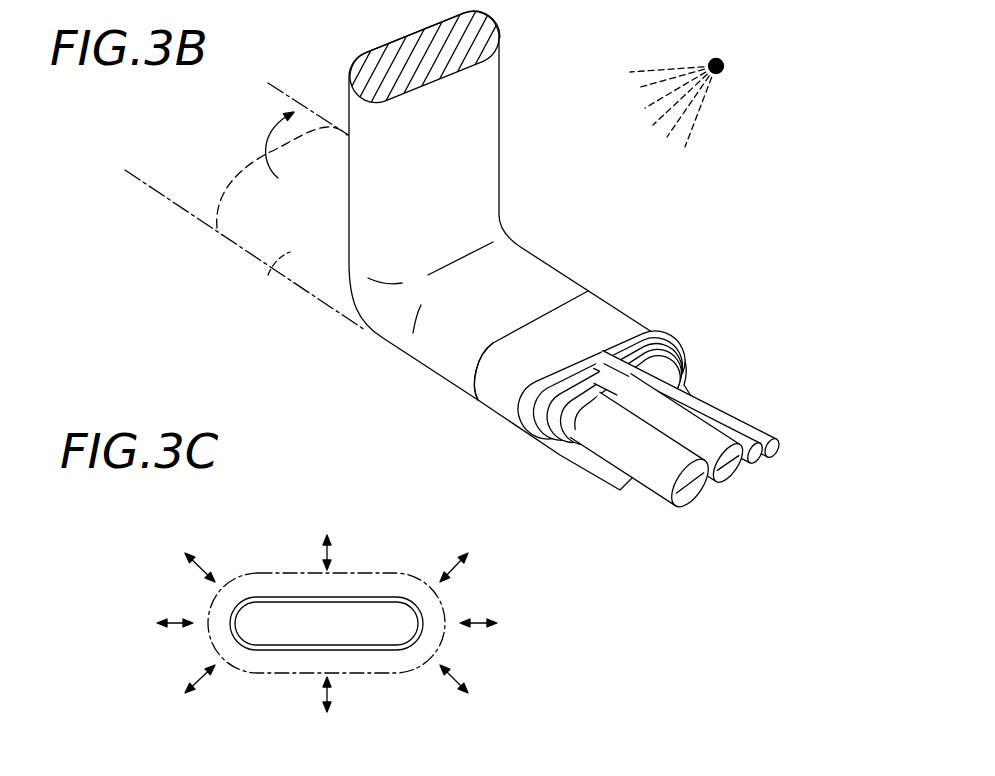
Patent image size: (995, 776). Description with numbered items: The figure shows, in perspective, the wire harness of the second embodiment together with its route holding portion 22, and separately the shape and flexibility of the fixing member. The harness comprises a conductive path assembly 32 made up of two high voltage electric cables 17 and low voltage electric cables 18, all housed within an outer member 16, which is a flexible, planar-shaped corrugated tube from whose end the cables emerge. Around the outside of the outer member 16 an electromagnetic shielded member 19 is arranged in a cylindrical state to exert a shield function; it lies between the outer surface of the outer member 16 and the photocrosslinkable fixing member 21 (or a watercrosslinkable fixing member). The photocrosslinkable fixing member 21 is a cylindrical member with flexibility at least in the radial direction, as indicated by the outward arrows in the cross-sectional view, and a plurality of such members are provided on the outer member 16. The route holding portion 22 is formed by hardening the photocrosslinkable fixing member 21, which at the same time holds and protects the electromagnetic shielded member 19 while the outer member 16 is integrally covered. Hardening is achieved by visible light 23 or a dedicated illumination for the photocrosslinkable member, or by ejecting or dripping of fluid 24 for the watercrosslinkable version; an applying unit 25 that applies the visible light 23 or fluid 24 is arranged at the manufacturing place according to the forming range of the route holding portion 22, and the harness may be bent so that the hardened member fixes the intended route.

In FIG. 3B, the outer member 16 is at (530, 444).
In FIG. 3B, the high voltage electric cable 17 is at (712, 433).
In FIG. 3B, the low voltage electric cable 18 is at (762, 435).
In FIG. 3B, the electromagnetic shielded member 19 is at (617, 327).
In FIG. 3C, the photocrosslinkable fixing member 21 is at (303, 598).
In FIG. 3B, the route holding portion 22 is at (513, 262).
In FIG. 3B, the visible light 23 is at (671, 76).
In FIG. 3B, the fluid 24 is at (655, 68).
In FIG. 3B, the applying unit 25 is at (724, 66).
In FIG. 3B, the conductive path assembly 32 is at (694, 367).